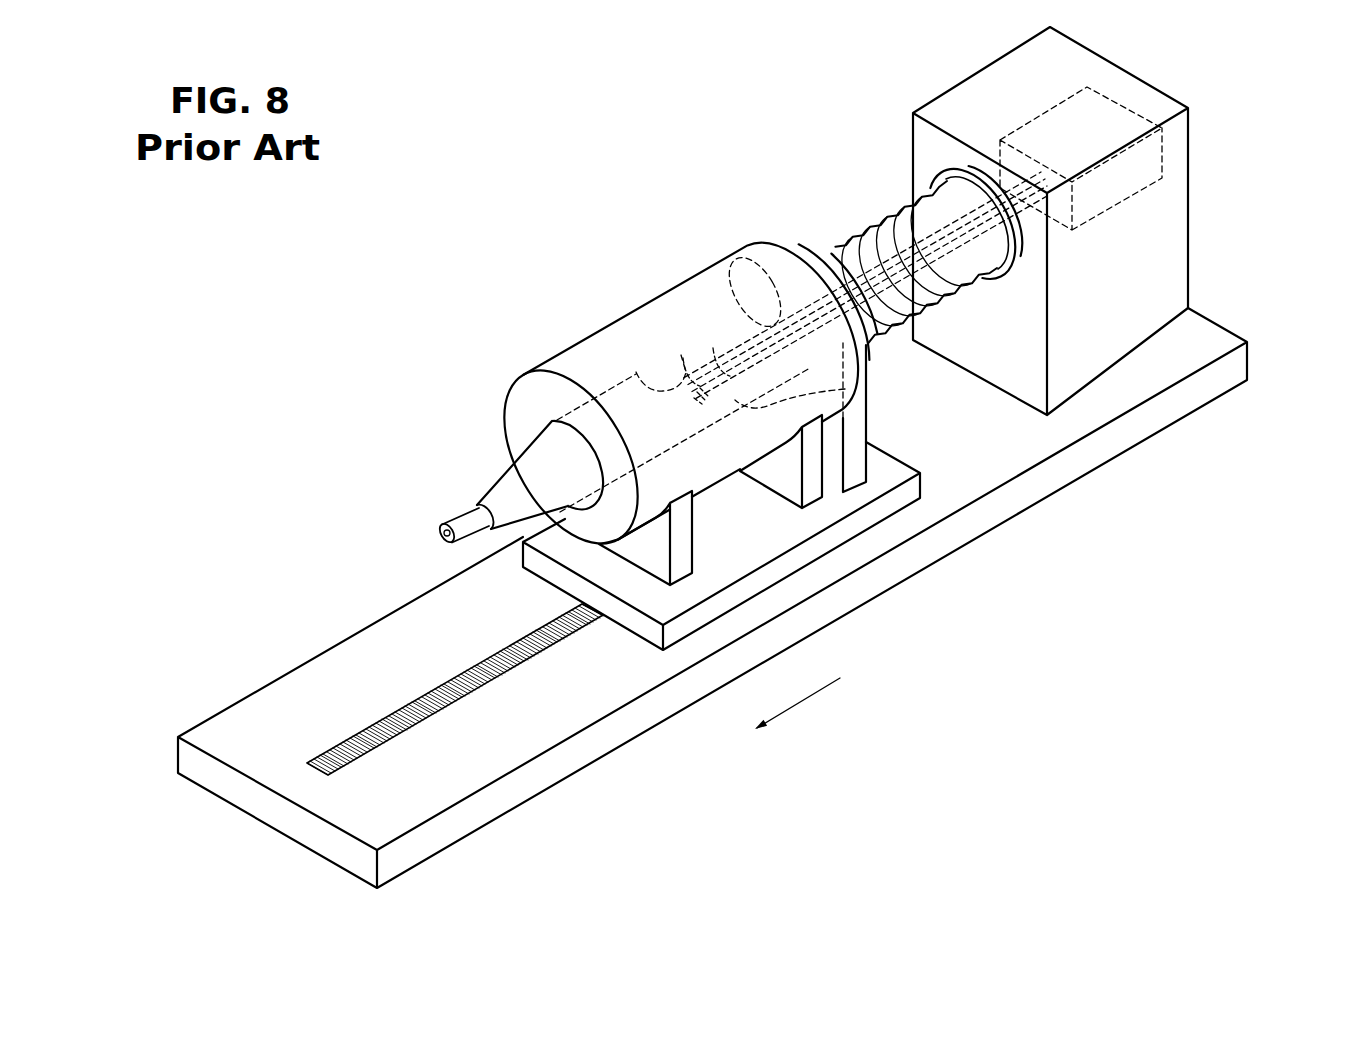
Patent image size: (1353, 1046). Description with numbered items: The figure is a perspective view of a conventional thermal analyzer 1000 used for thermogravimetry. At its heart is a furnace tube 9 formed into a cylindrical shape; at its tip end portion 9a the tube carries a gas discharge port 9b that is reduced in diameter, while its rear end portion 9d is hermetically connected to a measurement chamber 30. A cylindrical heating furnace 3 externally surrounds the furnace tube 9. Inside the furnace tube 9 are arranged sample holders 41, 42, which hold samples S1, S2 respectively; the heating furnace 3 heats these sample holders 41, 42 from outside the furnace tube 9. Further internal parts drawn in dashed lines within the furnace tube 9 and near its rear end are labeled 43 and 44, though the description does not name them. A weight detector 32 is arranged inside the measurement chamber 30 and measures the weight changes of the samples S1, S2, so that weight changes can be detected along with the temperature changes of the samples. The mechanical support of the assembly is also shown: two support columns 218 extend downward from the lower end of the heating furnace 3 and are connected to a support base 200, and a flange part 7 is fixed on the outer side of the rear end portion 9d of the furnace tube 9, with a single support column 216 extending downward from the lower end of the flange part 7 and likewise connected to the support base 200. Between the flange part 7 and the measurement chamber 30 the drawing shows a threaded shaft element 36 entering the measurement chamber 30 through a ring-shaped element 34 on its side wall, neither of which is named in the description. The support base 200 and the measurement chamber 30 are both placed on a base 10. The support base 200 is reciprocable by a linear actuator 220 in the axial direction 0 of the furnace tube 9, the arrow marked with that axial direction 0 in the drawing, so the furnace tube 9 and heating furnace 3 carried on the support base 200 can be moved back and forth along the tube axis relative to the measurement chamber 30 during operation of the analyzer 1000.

The heating furnace 3 is at (543, 360).
The flange part 7 is at (815, 266).
The furnace tube 9 is at (537, 444).
The tip end portion 9a is at (462, 517).
The gas discharge port 9b is at (437, 533).
The rear end portion 9d is at (777, 293).
The base 10 is at (937, 550).
The measurement chamber 30 is at (1173, 243).
The weight detector 32 is at (1160, 160).
The bearing 34 is at (944, 282).
The lead screw 36 is at (823, 248).
The sample holder 41 is at (636, 372).
The sample holder 42 is at (695, 405).
The second internal chamber 43 is at (728, 268).
The rear internal member 44 is at (845, 389).
The support base 200 is at (633, 622).
The support column 216 is at (860, 462).
The support columns 218 is at (687, 523).
The linear actuator 220 is at (345, 742).
The thermal analyzer 1000 is at (1014, 635).
The sample S1 is at (679, 344).
The sample S2 is at (713, 339).
The axial direction 0 is at (797, 714).